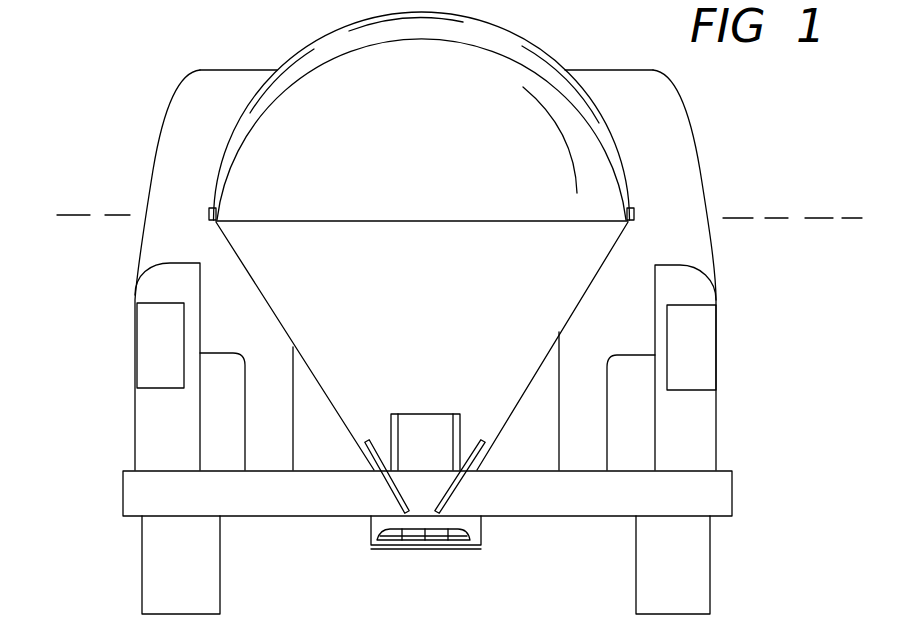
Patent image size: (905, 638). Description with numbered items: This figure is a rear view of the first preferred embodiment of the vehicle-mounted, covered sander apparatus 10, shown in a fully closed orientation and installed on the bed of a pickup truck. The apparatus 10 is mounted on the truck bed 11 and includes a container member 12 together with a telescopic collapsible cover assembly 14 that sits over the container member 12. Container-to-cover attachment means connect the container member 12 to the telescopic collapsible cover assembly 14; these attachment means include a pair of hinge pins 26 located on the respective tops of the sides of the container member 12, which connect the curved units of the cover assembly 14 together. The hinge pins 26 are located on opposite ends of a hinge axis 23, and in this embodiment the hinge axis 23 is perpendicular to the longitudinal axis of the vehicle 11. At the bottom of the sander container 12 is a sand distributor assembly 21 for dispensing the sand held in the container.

The vehicle-mounted, covered sander apparatus 10 is at (382, 337).
The truck bed 11 is at (769, 413).
The container member 12 is at (340, 430).
The telescopic collapsible cover assembly 14 is at (431, 319).
The sand distributor assembly 21 is at (371, 526).
The hinge axis 23 is at (778, 219).
The hinge pins 26 is at (420, 200).